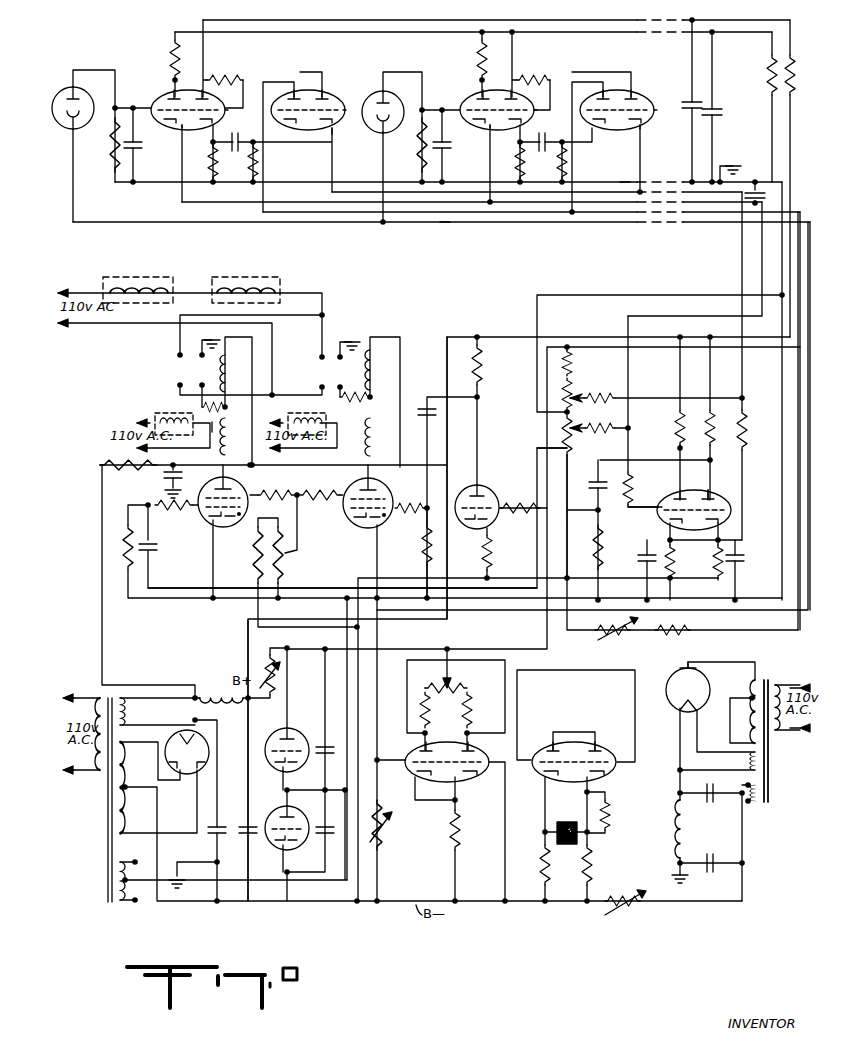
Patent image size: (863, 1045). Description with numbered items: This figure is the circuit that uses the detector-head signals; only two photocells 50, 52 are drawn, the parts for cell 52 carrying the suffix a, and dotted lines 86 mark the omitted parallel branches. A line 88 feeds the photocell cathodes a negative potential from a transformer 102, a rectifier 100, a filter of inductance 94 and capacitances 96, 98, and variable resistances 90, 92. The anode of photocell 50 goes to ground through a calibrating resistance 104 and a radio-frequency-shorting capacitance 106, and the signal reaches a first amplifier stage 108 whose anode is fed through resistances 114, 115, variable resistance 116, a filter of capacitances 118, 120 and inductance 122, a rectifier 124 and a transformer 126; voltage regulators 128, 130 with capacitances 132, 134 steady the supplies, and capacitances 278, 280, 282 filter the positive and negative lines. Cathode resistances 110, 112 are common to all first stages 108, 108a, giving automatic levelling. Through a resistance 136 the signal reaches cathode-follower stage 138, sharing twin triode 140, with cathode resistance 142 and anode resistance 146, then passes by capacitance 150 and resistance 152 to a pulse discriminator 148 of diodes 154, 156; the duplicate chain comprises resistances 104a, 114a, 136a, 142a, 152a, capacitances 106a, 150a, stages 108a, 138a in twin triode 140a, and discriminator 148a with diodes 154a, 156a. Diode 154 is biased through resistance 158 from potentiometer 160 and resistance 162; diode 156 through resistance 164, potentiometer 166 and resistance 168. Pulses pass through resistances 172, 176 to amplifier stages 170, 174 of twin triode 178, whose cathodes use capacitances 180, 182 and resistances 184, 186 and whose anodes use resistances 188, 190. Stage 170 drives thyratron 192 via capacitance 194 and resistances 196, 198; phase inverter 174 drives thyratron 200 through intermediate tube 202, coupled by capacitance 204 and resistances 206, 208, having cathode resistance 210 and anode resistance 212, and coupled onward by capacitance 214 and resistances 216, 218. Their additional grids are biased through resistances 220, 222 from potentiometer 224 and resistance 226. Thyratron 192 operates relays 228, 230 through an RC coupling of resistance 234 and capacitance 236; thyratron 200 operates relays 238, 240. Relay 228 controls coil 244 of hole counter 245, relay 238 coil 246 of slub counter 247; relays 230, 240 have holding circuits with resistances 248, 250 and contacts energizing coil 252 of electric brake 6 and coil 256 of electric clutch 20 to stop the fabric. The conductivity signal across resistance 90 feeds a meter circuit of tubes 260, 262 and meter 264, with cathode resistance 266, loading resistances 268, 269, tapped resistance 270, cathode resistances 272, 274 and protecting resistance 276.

The photocell 50 is at (71, 88).
The photocell 52 is at (378, 92).
The resistance 104 is at (115, 146).
The capacitance 106 is at (135, 145).
The first amplifier stage 108 is at (166, 94).
The resistance 114 is at (175, 58).
The resistance 136 is at (223, 76).
The second amplifier stage 138 is at (224, 113).
The twin triode 140 is at (186, 130).
The capacitance 150 is at (213, 144).
The cathode resistance 142 is at (211, 161).
The resistance 152 is at (253, 158).
The first diode 154 is at (298, 132).
The pulse discriminator 148 is at (326, 136).
The second diode 156 is at (342, 118).
The resistance 104a is at (422, 142).
The capacitance 106a is at (442, 145).
The first amplifier stage 108a is at (472, 94).
The resistance 114a is at (482, 56).
The resistance 136a is at (518, 70).
The second amplifier stage 138a is at (524, 120).
The twin triode 140a is at (490, 131).
The capacitance 150a is at (520, 144).
The cathode resistance 142a is at (520, 159).
The resistance 152a is at (569, 160).
The first diode 154a is at (600, 97).
The pulse discriminator 148a is at (630, 131).
The second diode 156a is at (647, 102).
The capacitance 278 is at (689, 108).
The capacitance 280 is at (720, 110).
The resistance 115 is at (772, 68).
The resistance 146 is at (793, 68).
The dotted lines 86 is at (658, 185).
The line 88 is at (450, 226).
The capacitance 282 is at (768, 195).
The coil 256 is at (85, 270).
The electric clutch 20 is at (117, 278).
The electric brake 6 is at (238, 268).
The coil 252 is at (245, 288).
The relay 230 is at (224, 366).
The relay 228 is at (226, 435).
The hole counter mechanism 245 is at (160, 413).
The resistance 248 is at (204, 404).
The coil 244 is at (185, 436).
The resistance 234 is at (132, 464).
The capacitance 236 is at (162, 478).
The coil 246 is at (321, 423).
The slub counter 247 is at (334, 427).
The relay 240 is at (373, 369).
The resistance 250 is at (372, 394).
The relay 238 is at (366, 446).
The capacitance 214 is at (429, 394).
The resistance 212 is at (483, 366).
The resistance 168 is at (573, 356).
The potentiometer 166 is at (571, 377).
The resistance 164 is at (595, 393).
The resistance 158 is at (603, 411).
The potentiometer 160 is at (577, 436).
The resistance 162 is at (550, 461).
The resistance 188 is at (677, 416).
The resistance 190 is at (710, 416).
The resistance 176 is at (749, 442).
The resistance 196 is at (193, 509).
The thyratron 192 is at (211, 523).
The capacitance 194 is at (154, 552).
The resistance 198 is at (140, 565).
The resistance 226 is at (252, 558).
The potentiometer 224 is at (281, 566).
The resistance 220 is at (279, 490).
The resistance 222 is at (320, 490).
The resistance 216 is at (422, 500).
The thyratron 200 is at (391, 520).
The resistance 218 is at (427, 548).
The intermediate tube 202 is at (481, 484).
The resistance 206 is at (531, 500).
The resistance 210 is at (493, 551).
The capacitance 204 is at (599, 482).
The twin triode tube 178 is at (698, 490).
The amplifier stage 170 is at (660, 484).
The resistance 172 is at (630, 508).
The amplifier stage 174 is at (730, 508).
The resistance 208 is at (603, 540).
The capacitance 180 is at (644, 564).
The resistance 184 is at (675, 550).
The resistance 186 is at (714, 563).
The capacitance 182 is at (742, 555).
The cathode resistance 112 is at (630, 635).
The cathode resistance 110 is at (692, 635).
The inductance 122 is at (222, 692).
The variable resistance 116 is at (287, 683).
The voltage regulator 128 is at (283, 728).
The capacitance 132 is at (320, 744).
The voltage regulator 130 is at (283, 809).
The capacitance 134 is at (320, 840).
The rectifier 124 is at (196, 778).
The transformer 126 is at (104, 790).
The capacitance 120 is at (217, 822).
The capacitance 118 is at (248, 838).
The tapped resistance 270 is at (449, 684).
The loading resistance 268 is at (426, 705).
The loading resistance 269 is at (469, 705).
The tube 260 is at (415, 778).
The resistance 266 is at (460, 828).
The variable resistance 90 is at (381, 840).
The tube 262 is at (536, 778).
The meter 264 is at (559, 846).
The resistance 272 is at (545, 852).
The resistance 274 is at (601, 868).
The protecting resistance 276 is at (618, 818).
The rectifier 100 is at (678, 706).
The transformer 102 is at (778, 743).
The inductance 94 is at (676, 840).
The capacitance 96 is at (710, 804).
The capacitance 98 is at (714, 872).
The variable resistance 92 is at (622, 910).